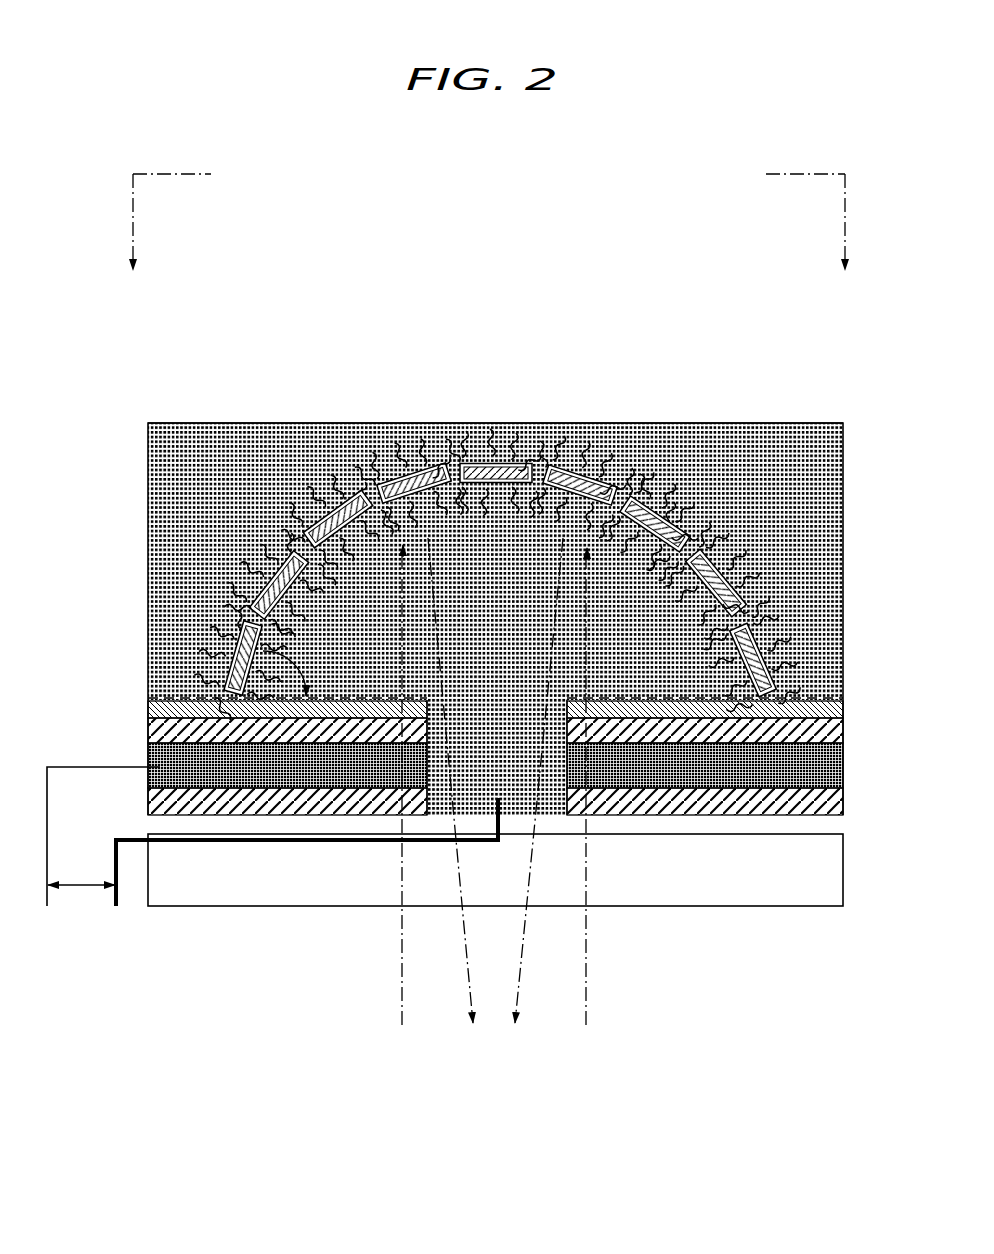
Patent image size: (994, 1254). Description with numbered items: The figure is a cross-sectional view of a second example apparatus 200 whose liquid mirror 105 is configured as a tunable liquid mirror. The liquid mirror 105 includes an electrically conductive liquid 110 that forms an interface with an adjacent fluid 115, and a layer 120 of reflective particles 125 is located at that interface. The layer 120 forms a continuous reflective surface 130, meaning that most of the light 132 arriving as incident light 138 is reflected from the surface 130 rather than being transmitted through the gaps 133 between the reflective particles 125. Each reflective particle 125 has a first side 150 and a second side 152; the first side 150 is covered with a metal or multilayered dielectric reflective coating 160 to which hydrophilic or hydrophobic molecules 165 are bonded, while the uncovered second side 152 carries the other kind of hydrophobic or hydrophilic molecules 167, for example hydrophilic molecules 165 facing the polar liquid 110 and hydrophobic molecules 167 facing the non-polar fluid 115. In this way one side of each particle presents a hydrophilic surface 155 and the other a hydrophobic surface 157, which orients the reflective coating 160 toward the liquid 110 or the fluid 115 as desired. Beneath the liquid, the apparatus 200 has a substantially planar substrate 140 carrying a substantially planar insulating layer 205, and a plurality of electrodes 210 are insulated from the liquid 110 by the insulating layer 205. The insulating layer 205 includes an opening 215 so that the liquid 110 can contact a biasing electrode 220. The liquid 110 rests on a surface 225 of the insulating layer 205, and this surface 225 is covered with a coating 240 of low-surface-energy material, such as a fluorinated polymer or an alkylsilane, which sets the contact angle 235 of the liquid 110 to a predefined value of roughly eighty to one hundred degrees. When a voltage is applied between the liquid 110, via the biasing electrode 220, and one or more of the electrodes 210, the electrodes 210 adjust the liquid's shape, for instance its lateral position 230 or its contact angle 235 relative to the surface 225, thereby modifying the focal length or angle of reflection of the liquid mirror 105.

The apparatus 200 is at (712, 134).
The liquid mirror 105 is at (800, 385).
The fluid 115 is at (197, 463).
The liquid 110 is at (372, 605).
The gaps 133 is at (262, 562).
The layer 120 is at (205, 582).
The hydrophobic or hydrophilic molecules 167 is at (513, 424).
The hydrophobic or hydrophilic molecules 165 is at (552, 500).
The reflective coating 160 is at (624, 506).
The reflective particles 125 is at (673, 497).
The second side 152 is at (688, 526).
The hydrophobic surface 157 is at (737, 558).
The first side 150 is at (649, 562).
The hydrophilic surface 155 is at (698, 618).
The surface 225 is at (594, 678).
The contact angle 235 is at (305, 638).
The reflective surface 130 is at (462, 525).
The lateral position 230 is at (540, 667).
The incident light 138 is at (394, 992).
The light 132 is at (463, 986).
The coating of low-surface-energy material 240 is at (835, 700).
The insulating layer 205 is at (835, 723).
The electrodes 210 is at (835, 761).
The opening 215 is at (536, 808).
The substrate 140 is at (815, 886).
The biasing electrode 220 is at (293, 834).